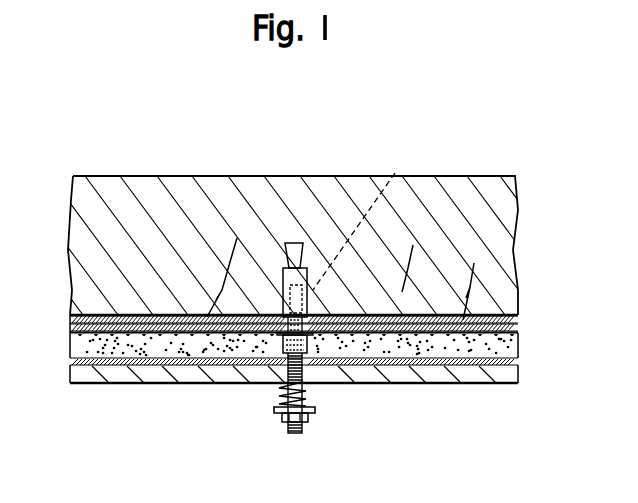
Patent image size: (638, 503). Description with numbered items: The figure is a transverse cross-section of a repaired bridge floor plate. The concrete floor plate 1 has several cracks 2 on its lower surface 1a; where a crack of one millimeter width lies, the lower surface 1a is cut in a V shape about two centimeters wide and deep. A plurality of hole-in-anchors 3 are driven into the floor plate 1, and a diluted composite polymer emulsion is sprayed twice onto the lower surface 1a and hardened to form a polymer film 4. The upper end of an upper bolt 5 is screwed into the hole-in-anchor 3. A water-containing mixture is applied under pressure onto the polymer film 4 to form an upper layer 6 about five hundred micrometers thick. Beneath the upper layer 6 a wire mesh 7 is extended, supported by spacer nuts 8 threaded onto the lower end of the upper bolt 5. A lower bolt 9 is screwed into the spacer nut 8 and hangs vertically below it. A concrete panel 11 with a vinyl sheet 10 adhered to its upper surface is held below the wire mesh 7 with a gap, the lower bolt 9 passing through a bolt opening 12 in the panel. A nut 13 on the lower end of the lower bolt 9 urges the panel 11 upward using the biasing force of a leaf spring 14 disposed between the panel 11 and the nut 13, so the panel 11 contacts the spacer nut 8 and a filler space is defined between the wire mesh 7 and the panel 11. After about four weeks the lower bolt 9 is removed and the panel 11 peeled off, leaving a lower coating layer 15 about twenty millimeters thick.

The concrete floor plate 1 is at (357, 190).
The lower surface 1a is at (67, 330).
The cracks 2 is at (410, 272).
The hole-in-anchor 3 is at (308, 283).
The polymer film 4 is at (520, 318).
The upper bolt 5 is at (364, 214).
The upper layer 6 is at (517, 322).
The wire mesh 7 is at (500, 337).
The spacer nut 8 is at (283, 358).
The lower bolt 9 is at (281, 388).
The vinyl sheet 10 is at (518, 372).
The concrete panel 11 is at (473, 375).
The bolt opening 12 is at (303, 387).
The nut 13 is at (307, 421).
The leaf spring 14 is at (280, 410).
The lower coating layer 15 is at (427, 348).